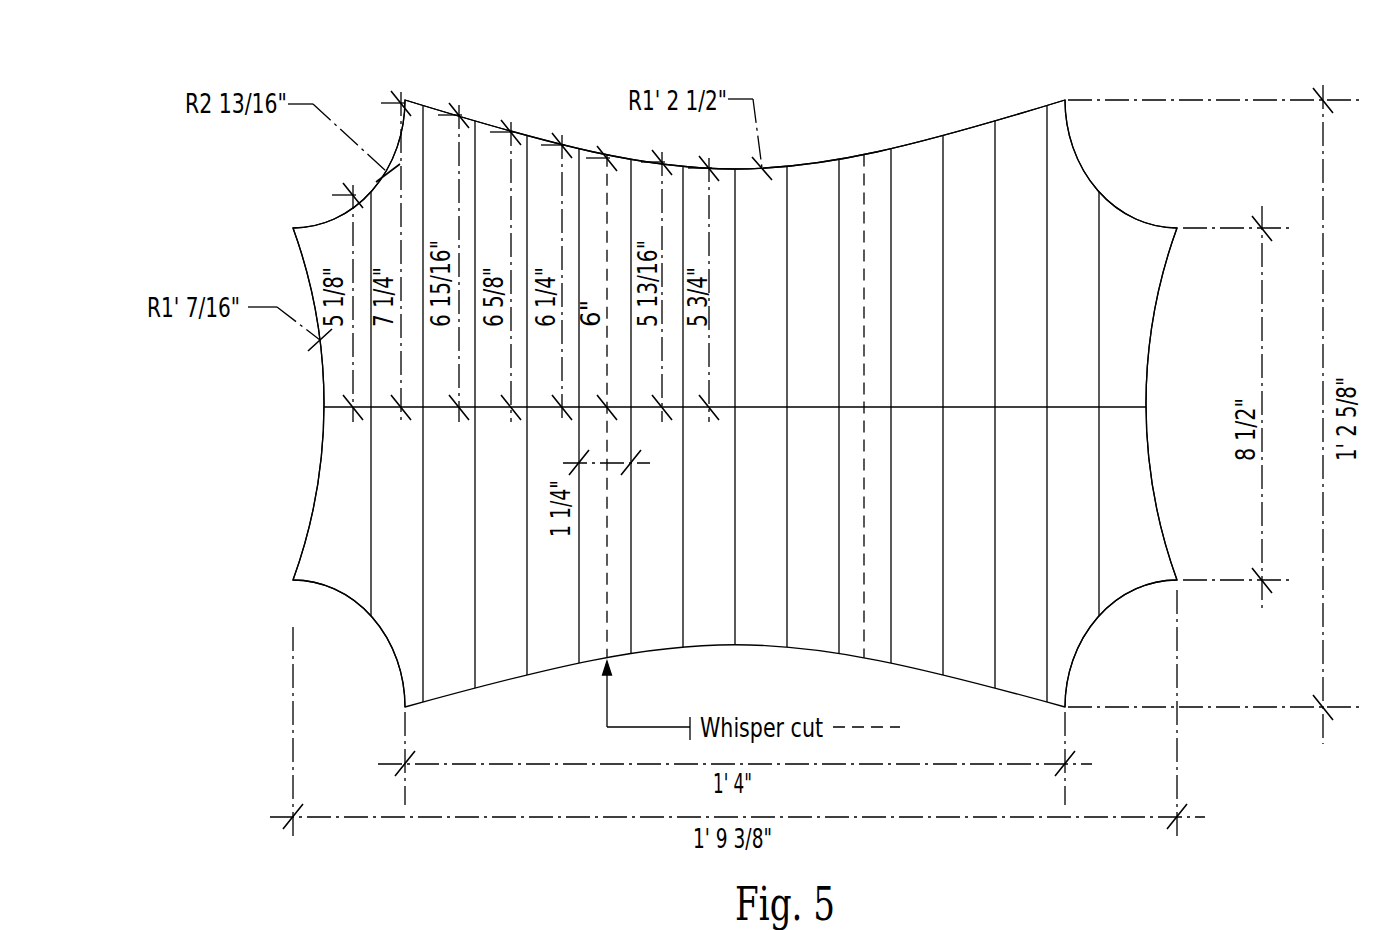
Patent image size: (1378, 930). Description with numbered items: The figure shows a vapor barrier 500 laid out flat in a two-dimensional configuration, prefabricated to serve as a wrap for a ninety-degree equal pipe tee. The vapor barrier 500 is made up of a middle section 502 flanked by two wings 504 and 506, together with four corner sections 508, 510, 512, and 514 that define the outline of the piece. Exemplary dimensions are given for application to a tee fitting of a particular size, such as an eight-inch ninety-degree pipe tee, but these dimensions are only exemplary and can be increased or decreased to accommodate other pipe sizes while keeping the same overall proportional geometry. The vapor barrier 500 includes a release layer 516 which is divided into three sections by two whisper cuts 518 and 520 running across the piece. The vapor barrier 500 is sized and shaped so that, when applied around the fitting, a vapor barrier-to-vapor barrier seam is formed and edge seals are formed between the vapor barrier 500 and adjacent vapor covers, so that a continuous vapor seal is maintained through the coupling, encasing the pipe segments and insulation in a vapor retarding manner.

The vapor barrier 500 is at (835, 88).
The middle section 502 is at (567, 143).
The wing 504 is at (1156, 326).
The wing 506 is at (310, 510).
The corner section 508 is at (1083, 177).
The corner section 510 is at (1116, 605).
The corner section 512 is at (317, 223).
The corner section 514 is at (343, 597).
The release layer 516 is at (778, 344).
The whisper cut 518 is at (862, 656).
The whisper cut 520 is at (609, 663).